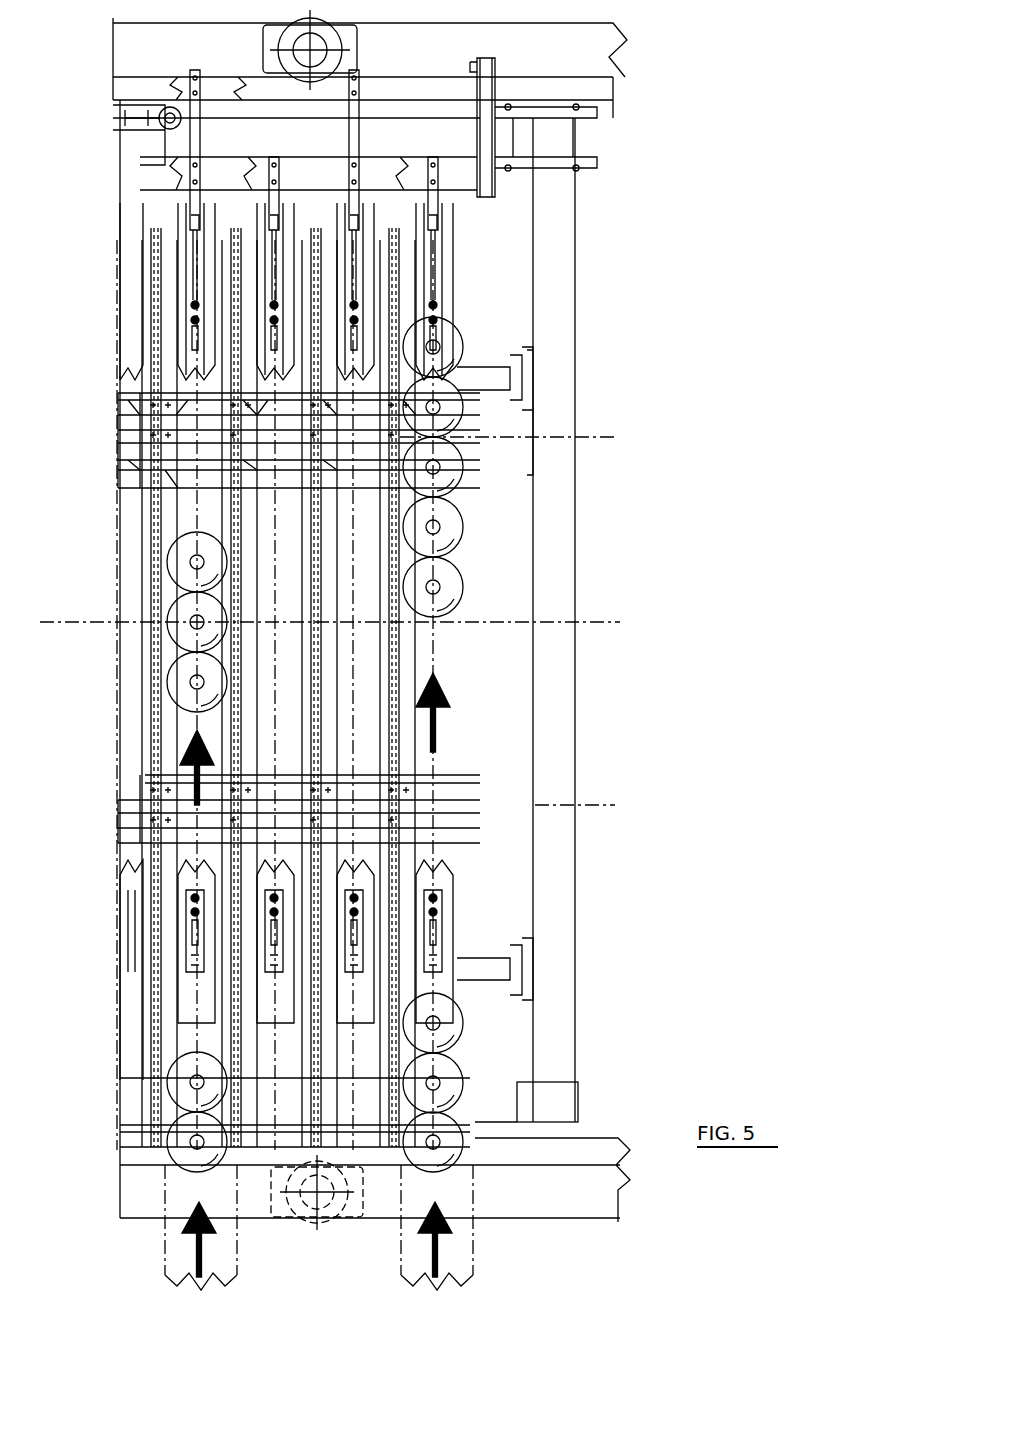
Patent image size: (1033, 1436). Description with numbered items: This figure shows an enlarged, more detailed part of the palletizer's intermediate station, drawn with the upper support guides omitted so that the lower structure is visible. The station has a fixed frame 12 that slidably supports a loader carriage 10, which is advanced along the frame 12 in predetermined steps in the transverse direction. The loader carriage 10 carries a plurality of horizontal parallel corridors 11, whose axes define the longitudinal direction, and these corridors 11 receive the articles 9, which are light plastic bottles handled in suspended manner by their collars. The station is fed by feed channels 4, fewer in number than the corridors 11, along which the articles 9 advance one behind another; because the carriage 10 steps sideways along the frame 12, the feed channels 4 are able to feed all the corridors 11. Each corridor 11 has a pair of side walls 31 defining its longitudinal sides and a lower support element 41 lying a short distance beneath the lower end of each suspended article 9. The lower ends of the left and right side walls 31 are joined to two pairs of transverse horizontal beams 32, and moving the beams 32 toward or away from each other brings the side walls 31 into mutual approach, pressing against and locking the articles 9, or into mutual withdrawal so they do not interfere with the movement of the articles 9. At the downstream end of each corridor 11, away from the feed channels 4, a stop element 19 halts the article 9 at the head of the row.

The feed channels 4 is at (165, 1198).
The articles 9 is at (462, 565).
The loader carriage 10 is at (580, 931).
The corridors 11 is at (366, 691).
The fixed frame 12 is at (595, 1170).
The stop element 19 is at (185, 200).
The side walls 31 is at (238, 722).
The transverse horizontal beams 32 is at (120, 393).
The lower support element 41 is at (310, 230).